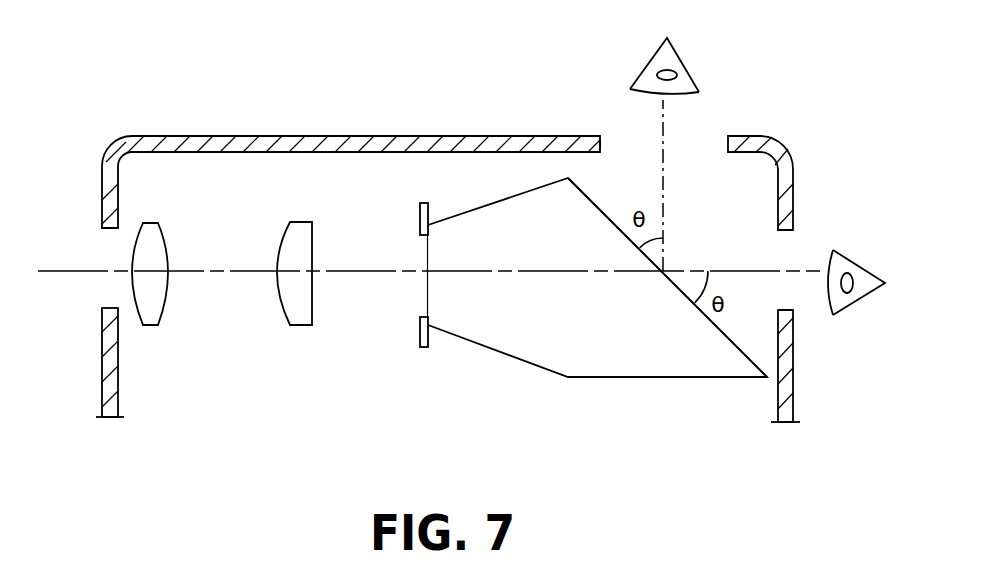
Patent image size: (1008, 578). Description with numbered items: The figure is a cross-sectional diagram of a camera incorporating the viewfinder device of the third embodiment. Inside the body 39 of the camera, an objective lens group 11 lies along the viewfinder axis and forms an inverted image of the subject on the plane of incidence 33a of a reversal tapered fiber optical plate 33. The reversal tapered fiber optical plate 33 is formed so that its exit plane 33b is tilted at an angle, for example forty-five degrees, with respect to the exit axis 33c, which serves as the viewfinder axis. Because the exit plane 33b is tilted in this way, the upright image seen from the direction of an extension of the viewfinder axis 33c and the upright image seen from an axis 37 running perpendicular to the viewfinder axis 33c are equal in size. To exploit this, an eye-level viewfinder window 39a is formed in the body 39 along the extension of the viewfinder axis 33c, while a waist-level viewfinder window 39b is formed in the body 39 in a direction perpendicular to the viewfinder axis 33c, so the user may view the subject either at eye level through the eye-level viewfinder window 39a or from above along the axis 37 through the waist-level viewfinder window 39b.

The objective lens group 11 is at (325, 338).
The reversal tapered fiber optical plate 33 is at (650, 357).
The plane of incidence 33a is at (427, 293).
The exit plane 33b is at (723, 333).
The exit axis 33c is at (600, 275).
The axis 37 is at (663, 121).
The body 39 is at (328, 148).
The eye-level viewfinder window 39a is at (790, 305).
The waist-level viewfinder window 39b is at (602, 143).